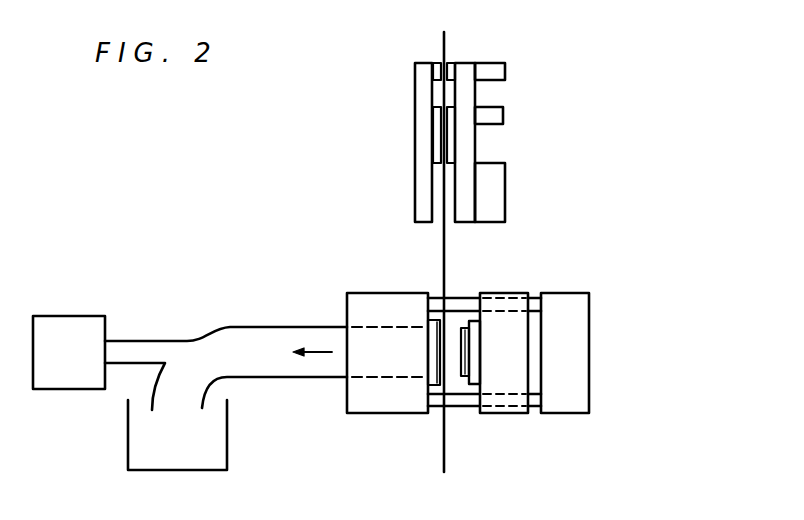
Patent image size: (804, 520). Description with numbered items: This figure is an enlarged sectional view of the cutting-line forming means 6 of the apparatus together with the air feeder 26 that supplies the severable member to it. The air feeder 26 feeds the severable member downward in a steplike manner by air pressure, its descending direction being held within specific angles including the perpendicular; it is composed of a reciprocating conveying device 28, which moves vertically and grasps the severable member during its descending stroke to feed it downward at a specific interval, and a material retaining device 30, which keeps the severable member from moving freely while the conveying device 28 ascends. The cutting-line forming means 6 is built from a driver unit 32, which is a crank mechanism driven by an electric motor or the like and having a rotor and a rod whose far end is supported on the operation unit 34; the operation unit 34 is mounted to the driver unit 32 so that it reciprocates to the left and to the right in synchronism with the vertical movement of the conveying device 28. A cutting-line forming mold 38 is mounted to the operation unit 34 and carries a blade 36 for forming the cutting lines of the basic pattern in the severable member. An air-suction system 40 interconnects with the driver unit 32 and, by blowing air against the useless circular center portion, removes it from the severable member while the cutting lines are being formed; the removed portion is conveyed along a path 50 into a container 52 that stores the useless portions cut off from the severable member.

The means for continuously forming cutting lines 6 is at (592, 270).
The air feeder 26 is at (514, 60).
The reciprocating conveying device 28 is at (437, 143).
The material retaining device 30 is at (450, 63).
The driver unit 32 is at (594, 329).
The operation unit 34 is at (512, 325).
The blade 36 is at (458, 340).
The cutting-line forming mold 38 is at (473, 328).
The air-suction system 40 is at (68, 328).
The path 50 is at (268, 343).
The container 52 is at (212, 438).